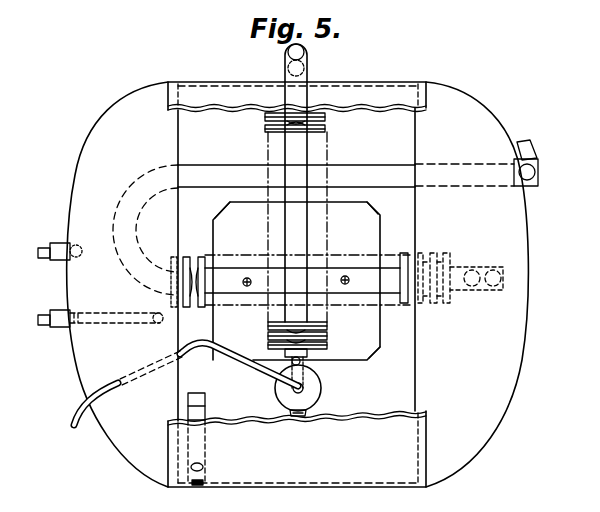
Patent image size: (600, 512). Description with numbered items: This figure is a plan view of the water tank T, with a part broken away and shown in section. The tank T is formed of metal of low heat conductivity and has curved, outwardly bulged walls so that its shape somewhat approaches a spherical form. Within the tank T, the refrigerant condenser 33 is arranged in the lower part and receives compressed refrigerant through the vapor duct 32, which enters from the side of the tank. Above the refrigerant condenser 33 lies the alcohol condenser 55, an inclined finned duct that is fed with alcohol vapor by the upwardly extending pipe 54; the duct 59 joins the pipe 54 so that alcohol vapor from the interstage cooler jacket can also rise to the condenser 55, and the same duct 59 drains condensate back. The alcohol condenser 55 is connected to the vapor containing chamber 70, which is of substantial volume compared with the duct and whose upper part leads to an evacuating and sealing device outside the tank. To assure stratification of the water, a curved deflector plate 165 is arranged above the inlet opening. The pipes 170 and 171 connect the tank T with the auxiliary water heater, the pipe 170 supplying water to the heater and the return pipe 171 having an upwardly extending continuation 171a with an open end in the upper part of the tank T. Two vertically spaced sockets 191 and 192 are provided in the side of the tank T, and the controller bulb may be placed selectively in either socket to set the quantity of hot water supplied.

The vapor duct 32 is at (533, 143).
The refrigerant condenser 33 is at (193, 240).
The pipe 54 is at (287, 50).
The alcohol condenser 55 is at (336, 141).
The duct 59 is at (308, 72).
The vapor containing chamber 70 is at (278, 395).
The curved deflector plate 165 is at (343, 349).
The pipe 170 is at (47, 247).
The return pipe 171 is at (47, 328).
The upwardly extending continuation 171a is at (134, 330).
The socket 191 is at (203, 466).
The socket 192 is at (204, 482).
The water tank T is at (108, 462).